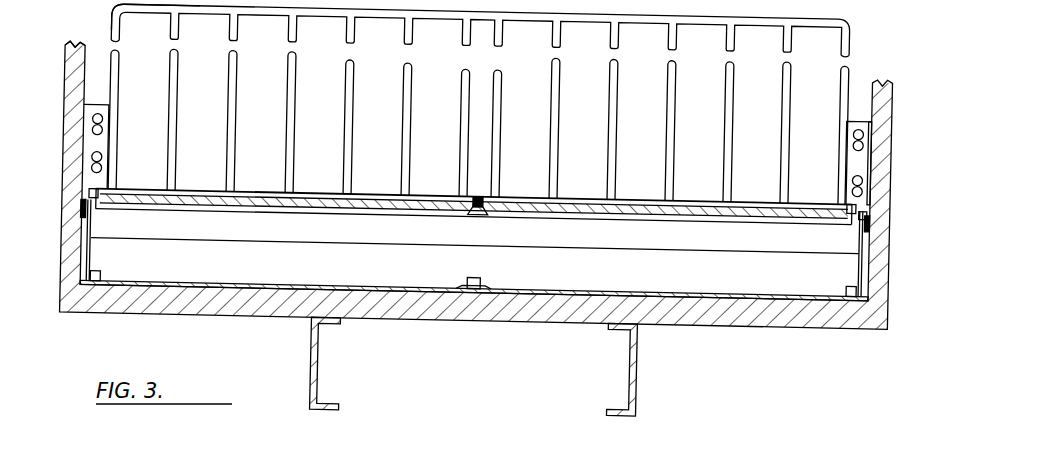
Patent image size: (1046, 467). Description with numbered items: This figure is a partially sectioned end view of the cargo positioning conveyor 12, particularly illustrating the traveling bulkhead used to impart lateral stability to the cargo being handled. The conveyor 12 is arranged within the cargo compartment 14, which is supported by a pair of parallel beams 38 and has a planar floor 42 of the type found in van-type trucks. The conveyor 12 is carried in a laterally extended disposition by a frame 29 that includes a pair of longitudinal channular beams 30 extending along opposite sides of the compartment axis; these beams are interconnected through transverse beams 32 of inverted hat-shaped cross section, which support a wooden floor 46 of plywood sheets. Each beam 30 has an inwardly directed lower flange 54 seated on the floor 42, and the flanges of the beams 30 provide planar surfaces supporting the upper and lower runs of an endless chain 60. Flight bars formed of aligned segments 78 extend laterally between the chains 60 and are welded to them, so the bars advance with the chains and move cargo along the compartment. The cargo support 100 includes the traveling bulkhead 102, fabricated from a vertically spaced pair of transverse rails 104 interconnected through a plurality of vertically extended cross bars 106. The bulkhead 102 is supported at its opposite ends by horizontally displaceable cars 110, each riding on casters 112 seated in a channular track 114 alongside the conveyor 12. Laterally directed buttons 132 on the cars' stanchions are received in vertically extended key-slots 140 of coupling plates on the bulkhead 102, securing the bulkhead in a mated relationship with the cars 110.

The cargo positioning conveyor 12 is at (88, 184).
The cargo compartment 14 is at (96, 66).
The frame 29 is at (870, 275).
The longitudinal channular beams 30 is at (97, 241).
The transverse beams 32 is at (403, 231).
The parallel beams 38 is at (320, 366).
The planar floor 42 is at (757, 296).
The wooden floor 46 is at (700, 232).
The lower flange 54 is at (107, 282).
The endless chain 60 is at (480, 194).
The flight bar segments 78 is at (318, 192).
The cargo support 100 is at (870, 64).
The traveling bulkhead 102 is at (852, 32).
The transverse rails 104 is at (120, 77).
The cross bars 106 is at (403, 134).
The cars 110 is at (84, 128).
The casters 112 is at (84, 211).
The channular track 114 is at (103, 222).
The buttons 132 is at (103, 152).
The key-slots 140 is at (876, 168).